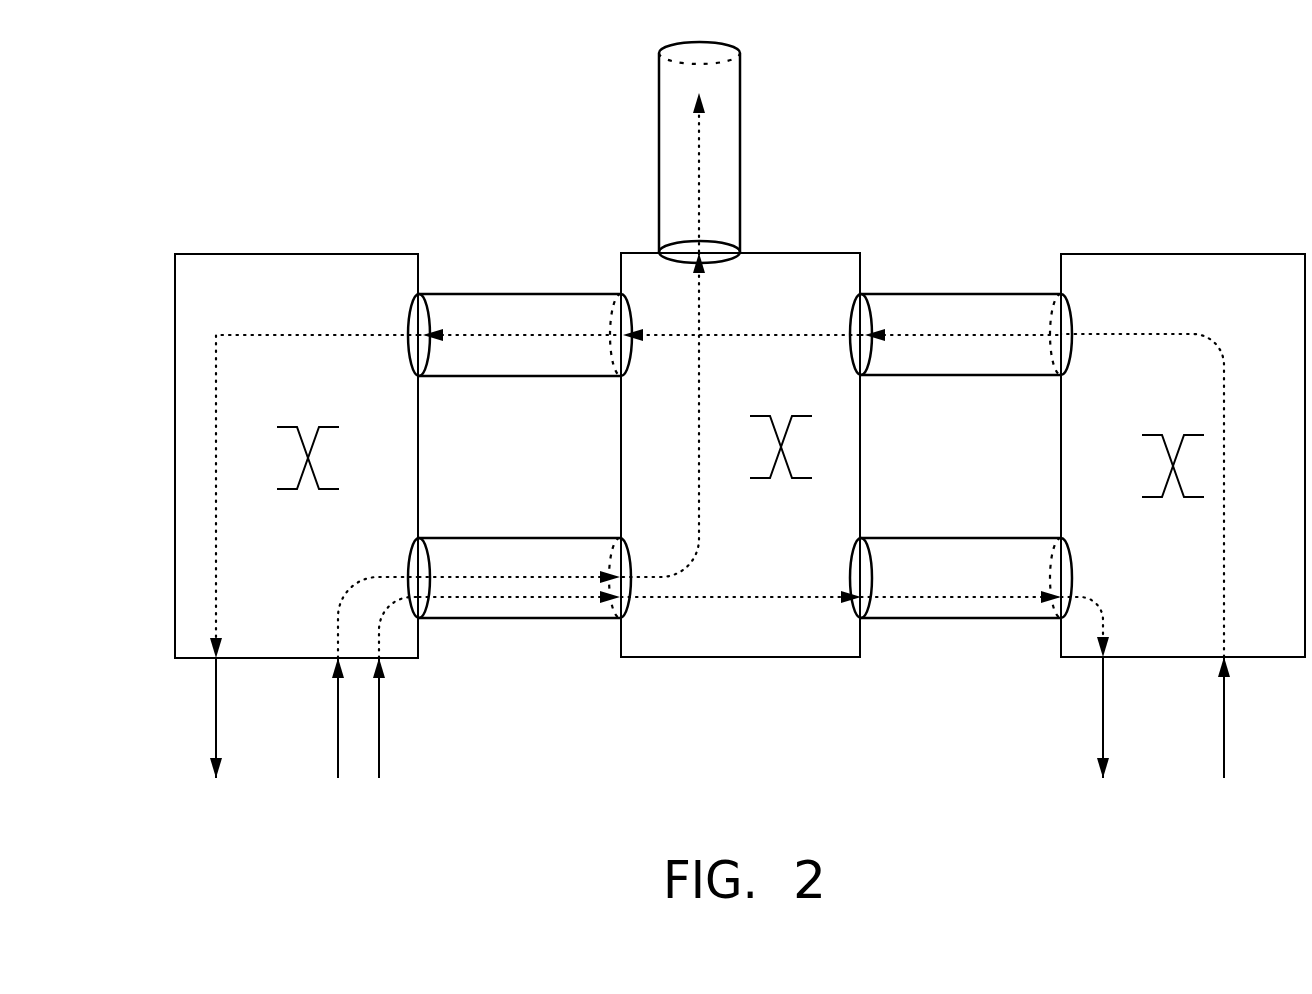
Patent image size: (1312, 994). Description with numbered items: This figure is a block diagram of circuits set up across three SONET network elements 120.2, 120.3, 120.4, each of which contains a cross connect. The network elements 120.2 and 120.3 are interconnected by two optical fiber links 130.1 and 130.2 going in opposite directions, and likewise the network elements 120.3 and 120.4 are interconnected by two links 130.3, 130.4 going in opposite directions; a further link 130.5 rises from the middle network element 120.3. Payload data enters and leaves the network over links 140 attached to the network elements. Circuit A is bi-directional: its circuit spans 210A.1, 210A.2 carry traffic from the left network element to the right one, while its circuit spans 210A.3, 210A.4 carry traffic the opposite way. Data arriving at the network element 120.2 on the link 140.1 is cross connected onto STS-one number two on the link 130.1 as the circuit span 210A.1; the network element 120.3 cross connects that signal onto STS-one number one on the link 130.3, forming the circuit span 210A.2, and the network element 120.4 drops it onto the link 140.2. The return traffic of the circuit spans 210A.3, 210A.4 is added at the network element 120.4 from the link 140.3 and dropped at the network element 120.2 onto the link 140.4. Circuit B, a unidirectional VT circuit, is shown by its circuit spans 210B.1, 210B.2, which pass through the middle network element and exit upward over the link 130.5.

The network element 120.2 is at (277, 253).
The network element 120.3 is at (780, 253).
The network element 120.4 is at (1205, 253).
The optical fiber link 130.1 is at (520, 538).
The optical fiber link 130.2 is at (538, 294).
The optical fiber link 130.3 is at (978, 538).
The optical fiber link 130.4 is at (978, 294).
The optical fiber link 130.5 is at (659, 114).
The circuit span 210A.1 is at (458, 597).
The circuit span 210A.2 is at (900, 597).
The circuit span 210A.3 is at (944, 334).
The circuit span 210A.4 is at (532, 334).
The circuit span 210B.1 is at (560, 577).
The circuit span 210B.2 is at (700, 133).
The link 140 is at (338, 762).
The link 140.1 is at (379, 762).
The link 140.2 is at (1103, 740).
The link 140.3 is at (1224, 740).
The link 140.4 is at (216, 752).